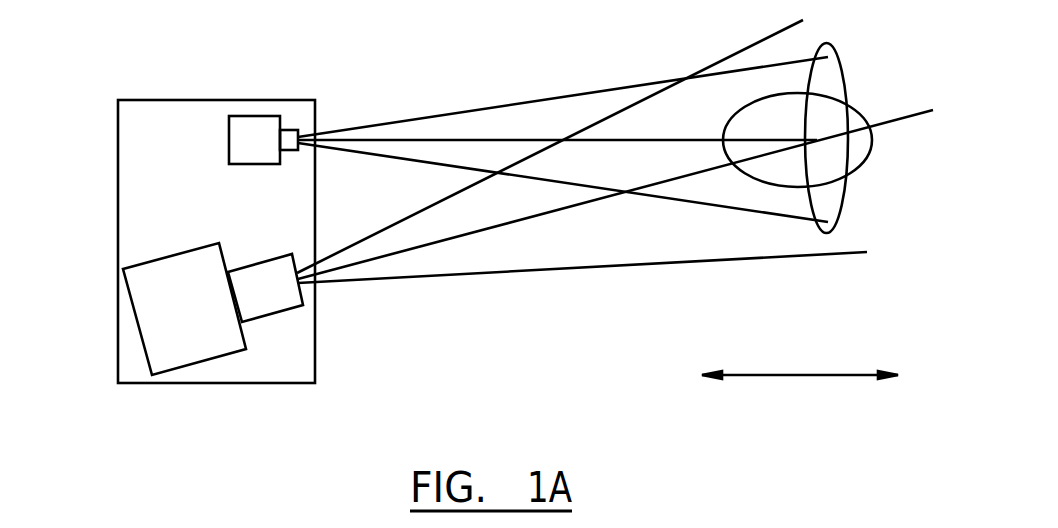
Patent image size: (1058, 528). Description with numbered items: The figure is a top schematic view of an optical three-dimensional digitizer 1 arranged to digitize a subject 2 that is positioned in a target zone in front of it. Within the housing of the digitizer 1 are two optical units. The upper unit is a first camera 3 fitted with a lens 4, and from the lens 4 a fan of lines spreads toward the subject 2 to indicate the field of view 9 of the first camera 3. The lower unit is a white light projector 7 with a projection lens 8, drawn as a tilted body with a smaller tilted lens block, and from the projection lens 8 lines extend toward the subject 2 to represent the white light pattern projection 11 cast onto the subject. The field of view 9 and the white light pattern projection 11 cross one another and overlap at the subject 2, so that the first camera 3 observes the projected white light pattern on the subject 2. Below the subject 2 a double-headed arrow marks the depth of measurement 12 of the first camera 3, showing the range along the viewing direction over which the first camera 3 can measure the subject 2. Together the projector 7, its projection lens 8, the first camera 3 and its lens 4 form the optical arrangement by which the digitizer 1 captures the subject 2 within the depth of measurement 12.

The optical 3D digitizer 1 is at (145, 114).
The subject 2 is at (847, 100).
The first camera 3 is at (253, 116).
The lens 4 is at (293, 128).
The white light projector 7 is at (142, 272).
The projection lens 8 is at (253, 276).
The field of view 9 is at (418, 131).
The white light pattern projection 11 is at (398, 272).
The depth of measurement 12 is at (793, 377).